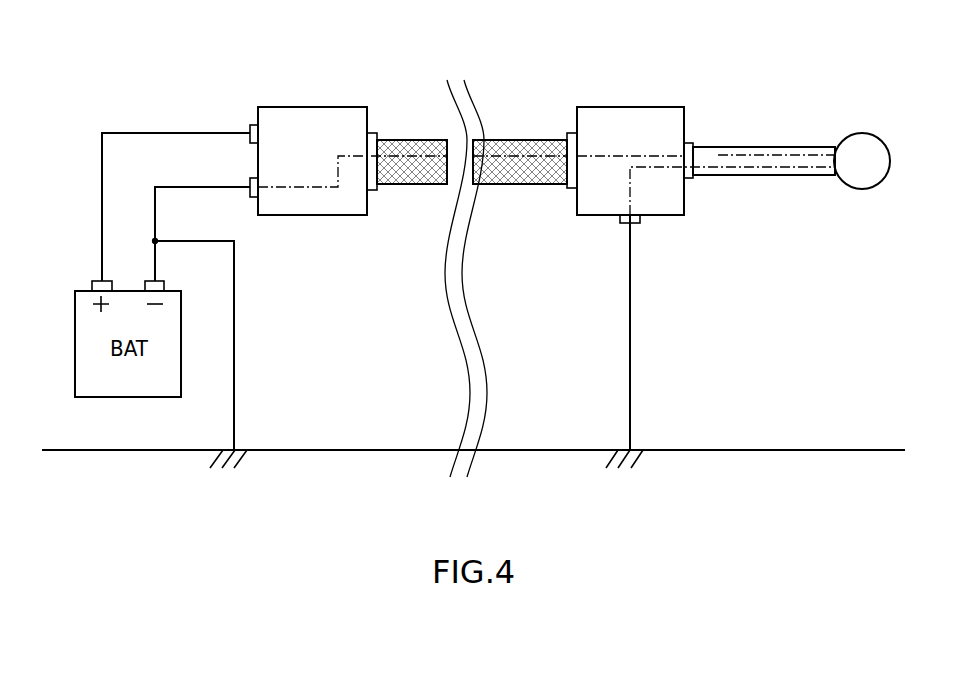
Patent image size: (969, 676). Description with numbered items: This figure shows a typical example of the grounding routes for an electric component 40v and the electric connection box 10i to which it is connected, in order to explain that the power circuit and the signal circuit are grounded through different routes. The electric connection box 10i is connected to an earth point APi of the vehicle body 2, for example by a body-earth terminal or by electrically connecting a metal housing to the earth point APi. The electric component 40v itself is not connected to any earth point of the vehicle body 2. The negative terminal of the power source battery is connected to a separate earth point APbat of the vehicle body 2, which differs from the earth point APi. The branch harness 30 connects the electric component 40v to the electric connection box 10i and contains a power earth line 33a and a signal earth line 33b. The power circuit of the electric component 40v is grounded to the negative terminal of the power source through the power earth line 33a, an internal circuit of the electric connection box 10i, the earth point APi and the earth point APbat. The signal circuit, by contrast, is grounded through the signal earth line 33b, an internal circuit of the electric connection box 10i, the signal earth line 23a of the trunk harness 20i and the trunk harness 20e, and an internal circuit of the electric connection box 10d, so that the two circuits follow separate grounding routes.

The vehicle body 2 is at (800, 450).
The electric connection box 10d is at (312, 107).
The electric connection box 10i is at (628, 107).
The trunk harness 20e is at (412, 140).
The trunk harness 20i is at (528, 140).
The signal earth line 23a is at (402, 157).
The branch harness 30 is at (788, 147).
The power earth line 33a is at (768, 168).
The signal earth line 33b is at (718, 155).
The electric component 40v is at (853, 134).
The earth point APbat is at (234, 450).
The earth point APi is at (630, 450).